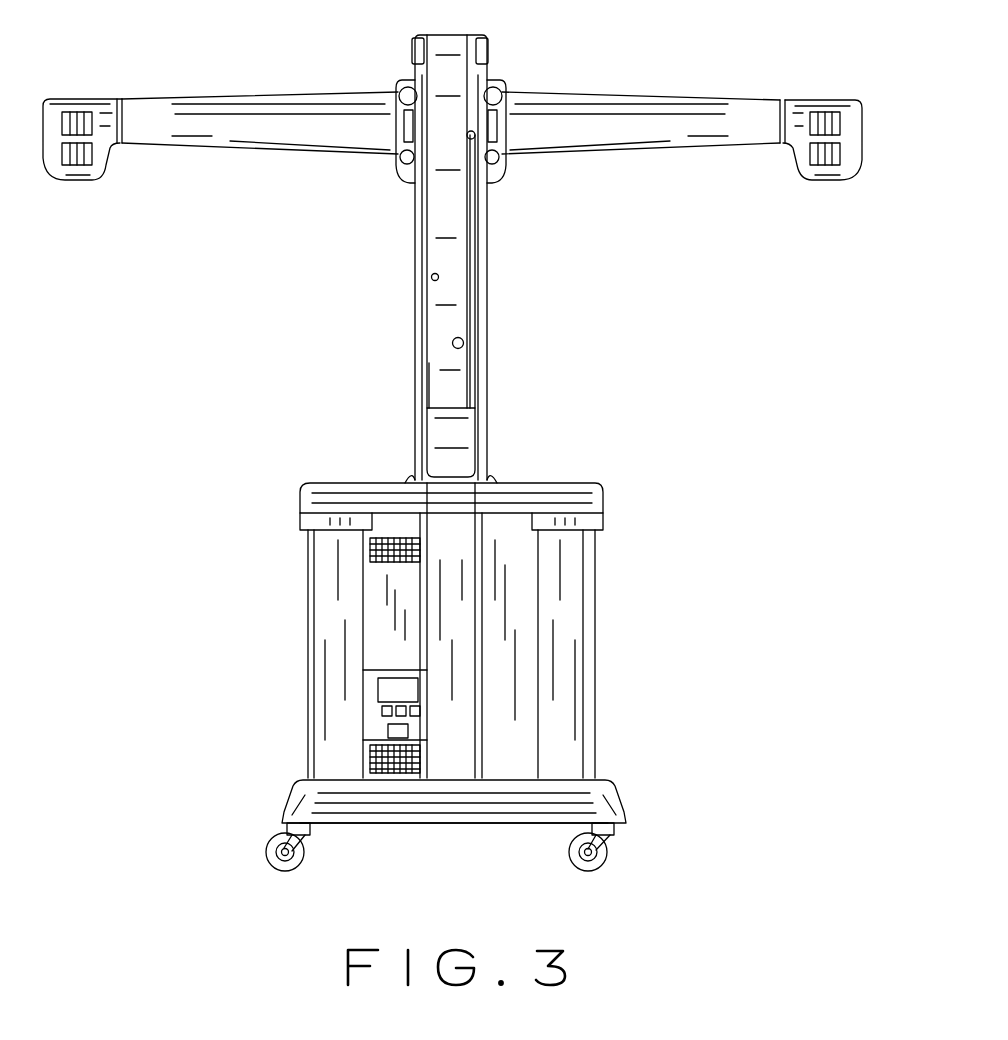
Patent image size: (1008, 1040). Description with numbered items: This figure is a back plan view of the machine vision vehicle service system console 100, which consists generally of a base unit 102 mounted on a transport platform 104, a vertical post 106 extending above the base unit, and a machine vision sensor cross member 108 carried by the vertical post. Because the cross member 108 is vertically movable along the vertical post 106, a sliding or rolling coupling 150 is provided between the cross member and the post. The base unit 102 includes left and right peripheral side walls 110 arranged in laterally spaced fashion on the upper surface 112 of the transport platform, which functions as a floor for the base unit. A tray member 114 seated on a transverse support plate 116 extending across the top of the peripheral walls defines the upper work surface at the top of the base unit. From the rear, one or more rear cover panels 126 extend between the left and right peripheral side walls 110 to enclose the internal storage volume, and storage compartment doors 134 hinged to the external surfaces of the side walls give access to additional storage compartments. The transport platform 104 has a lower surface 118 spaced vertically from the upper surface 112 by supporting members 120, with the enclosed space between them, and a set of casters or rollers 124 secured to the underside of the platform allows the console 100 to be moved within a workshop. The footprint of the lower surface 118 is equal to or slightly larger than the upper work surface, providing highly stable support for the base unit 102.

The machine vision vehicle service system console 100 is at (245, 355).
The base unit 102 is at (262, 592).
The transport platform 104 is at (275, 780).
The vertical post 106 is at (505, 280).
The machine vision sensor cross member 108 is at (280, 78).
The peripheral side walls 110 is at (345, 683).
The upper surface 112 is at (550, 775).
The tray member 114 is at (548, 465).
The transverse support plate 116 is at (372, 527).
The lower surface 118 is at (400, 828).
The supporting members 120 is at (285, 805).
The casters or rollers 124 is at (302, 870).
The rear cover panels 126 is at (378, 598).
The storage compartment doors 134 is at (308, 657).
The sliding or rolling coupling 150 is at (400, 84).